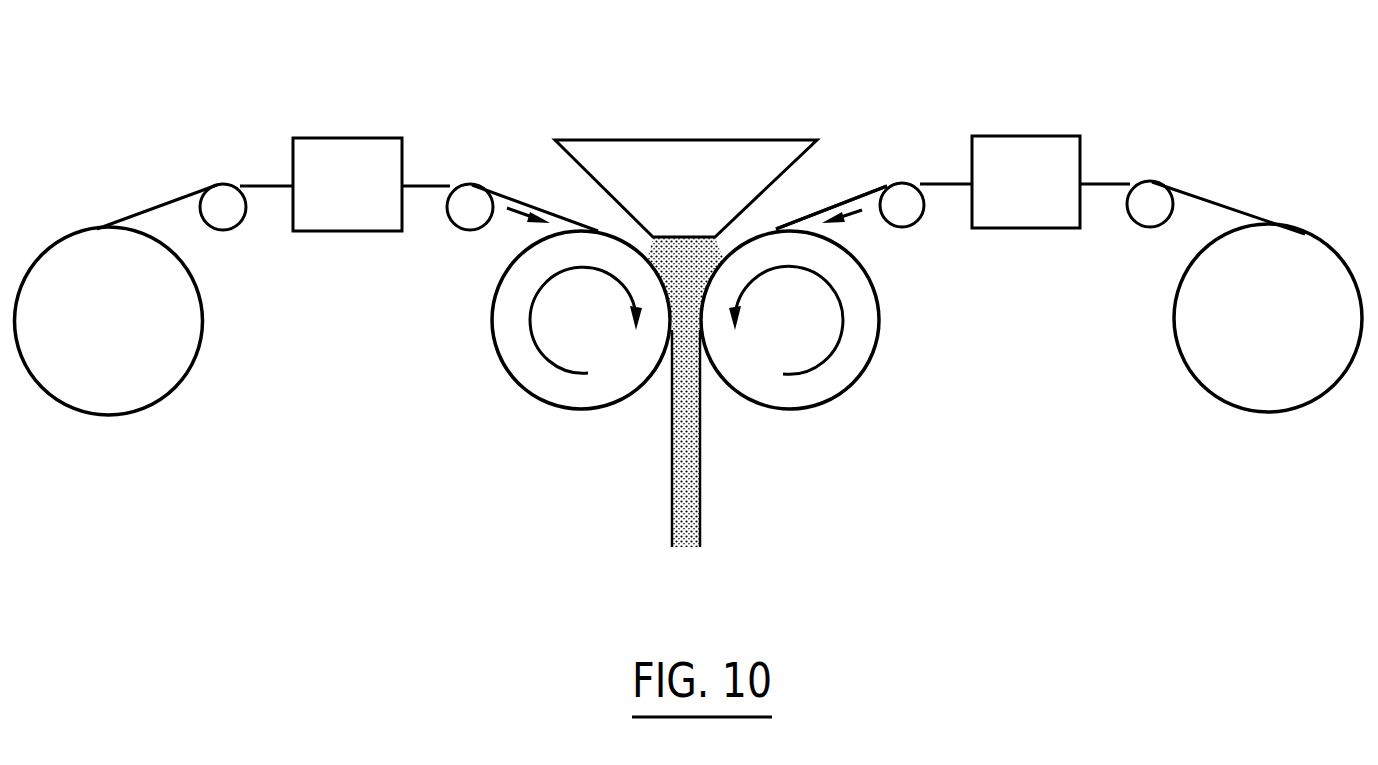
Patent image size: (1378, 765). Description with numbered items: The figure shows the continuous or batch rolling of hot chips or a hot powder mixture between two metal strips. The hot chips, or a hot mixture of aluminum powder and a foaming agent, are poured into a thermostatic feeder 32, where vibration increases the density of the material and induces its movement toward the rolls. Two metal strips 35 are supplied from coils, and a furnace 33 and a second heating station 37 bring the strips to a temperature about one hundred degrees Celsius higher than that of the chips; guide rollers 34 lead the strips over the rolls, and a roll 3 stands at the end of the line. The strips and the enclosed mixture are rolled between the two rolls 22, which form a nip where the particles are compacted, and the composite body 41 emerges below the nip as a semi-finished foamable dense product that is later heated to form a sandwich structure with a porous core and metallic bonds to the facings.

The take-up roll 3 is at (1300, 255).
The rolls 22 is at (868, 330).
The thermostatic feeder 32 is at (722, 150).
The furnace 33 is at (1040, 148).
The guide roller 34 is at (912, 212).
The web 35 is at (890, 175).
The treatment station 37 is at (441, 166).
The composite body 41 is at (701, 508).